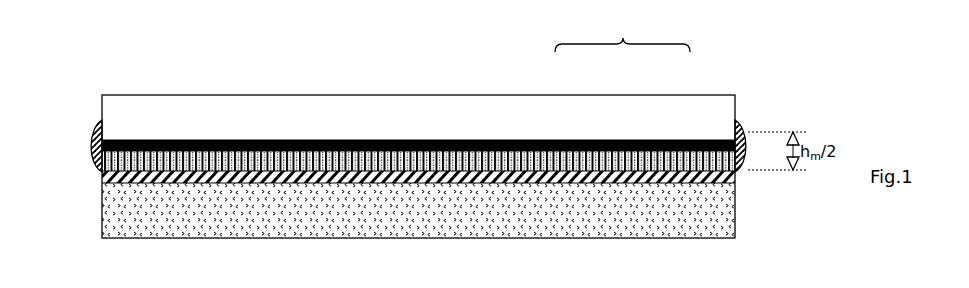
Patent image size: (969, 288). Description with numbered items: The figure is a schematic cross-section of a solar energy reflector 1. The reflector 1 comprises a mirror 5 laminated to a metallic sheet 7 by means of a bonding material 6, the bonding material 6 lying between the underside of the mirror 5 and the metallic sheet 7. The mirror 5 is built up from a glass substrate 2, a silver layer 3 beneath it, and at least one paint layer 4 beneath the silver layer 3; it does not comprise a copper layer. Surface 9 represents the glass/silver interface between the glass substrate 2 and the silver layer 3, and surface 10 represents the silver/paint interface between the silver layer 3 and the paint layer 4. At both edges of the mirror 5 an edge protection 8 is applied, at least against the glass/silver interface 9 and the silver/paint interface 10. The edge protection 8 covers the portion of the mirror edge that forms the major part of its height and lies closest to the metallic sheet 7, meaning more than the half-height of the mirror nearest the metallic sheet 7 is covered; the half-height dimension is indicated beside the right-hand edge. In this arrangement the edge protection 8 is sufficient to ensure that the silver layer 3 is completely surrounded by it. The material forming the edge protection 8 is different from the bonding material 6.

The solar energy reflector 1 is at (80, 198).
The glass substrate 2 is at (533, 123).
The silver layer 3 is at (582, 142).
The paint layer 4 is at (624, 150).
The mirror 5 is at (622, 33).
The bonding material 6 is at (722, 177).
The metallic sheet 7 is at (697, 207).
The edge protection 8 is at (97, 152).
The glass/silver interface 9 is at (678, 142).
The silver/paint interface 10 is at (673, 153).